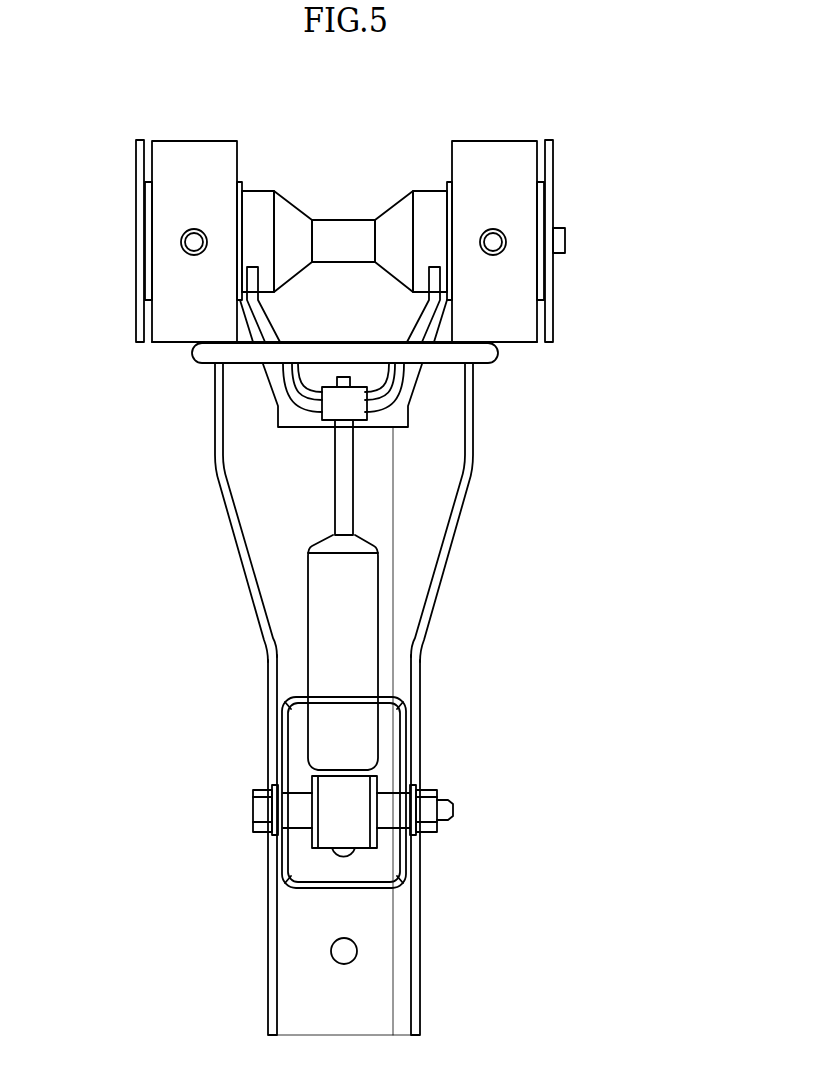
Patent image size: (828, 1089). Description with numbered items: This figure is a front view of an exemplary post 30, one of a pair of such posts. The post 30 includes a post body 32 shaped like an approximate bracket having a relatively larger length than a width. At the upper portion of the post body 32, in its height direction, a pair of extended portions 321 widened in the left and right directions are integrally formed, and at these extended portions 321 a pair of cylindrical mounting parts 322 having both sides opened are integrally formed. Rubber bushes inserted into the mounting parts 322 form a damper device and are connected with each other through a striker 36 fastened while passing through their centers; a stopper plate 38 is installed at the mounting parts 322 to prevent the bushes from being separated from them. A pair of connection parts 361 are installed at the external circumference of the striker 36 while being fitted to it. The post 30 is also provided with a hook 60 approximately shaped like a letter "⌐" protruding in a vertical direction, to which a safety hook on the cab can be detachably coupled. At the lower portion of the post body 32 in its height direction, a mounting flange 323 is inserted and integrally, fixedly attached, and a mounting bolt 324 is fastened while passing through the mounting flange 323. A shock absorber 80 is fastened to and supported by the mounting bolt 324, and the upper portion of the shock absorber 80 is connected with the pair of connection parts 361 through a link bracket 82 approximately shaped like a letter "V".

The post 30 is at (600, 268).
The post body 32 is at (345, 699).
The extended portions 321 is at (215, 440).
The mounting parts 322 is at (195, 153).
The mounting flange 323 is at (397, 758).
The mounting bolt 324 is at (455, 808).
The striker 36 is at (342, 228).
The connection parts 361 is at (263, 196).
The stopper plate 38 is at (140, 161).
The hook 60 is at (344, 355).
The shock absorber 80 is at (367, 603).
The link bracket 82 is at (302, 400).